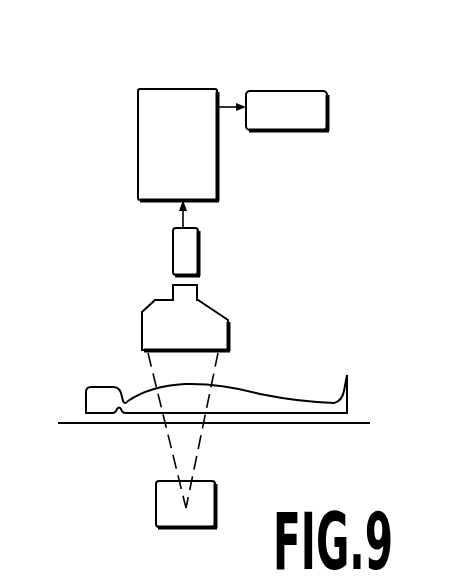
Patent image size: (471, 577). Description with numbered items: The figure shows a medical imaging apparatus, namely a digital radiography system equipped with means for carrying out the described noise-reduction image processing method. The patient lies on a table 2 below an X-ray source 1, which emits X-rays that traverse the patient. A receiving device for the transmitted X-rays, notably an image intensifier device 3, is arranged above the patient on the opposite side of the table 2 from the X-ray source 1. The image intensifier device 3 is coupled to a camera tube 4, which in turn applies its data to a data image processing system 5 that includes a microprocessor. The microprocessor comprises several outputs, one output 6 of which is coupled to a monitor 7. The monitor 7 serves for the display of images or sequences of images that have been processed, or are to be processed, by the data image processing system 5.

The X-ray source 1 is at (146, 508).
The table 2 is at (106, 436).
The image intensifier device 3 is at (132, 302).
The camera tube 4 is at (162, 253).
The data image processing system 5 is at (160, 135).
The output 6 is at (232, 86).
The monitor 7 is at (340, 110).